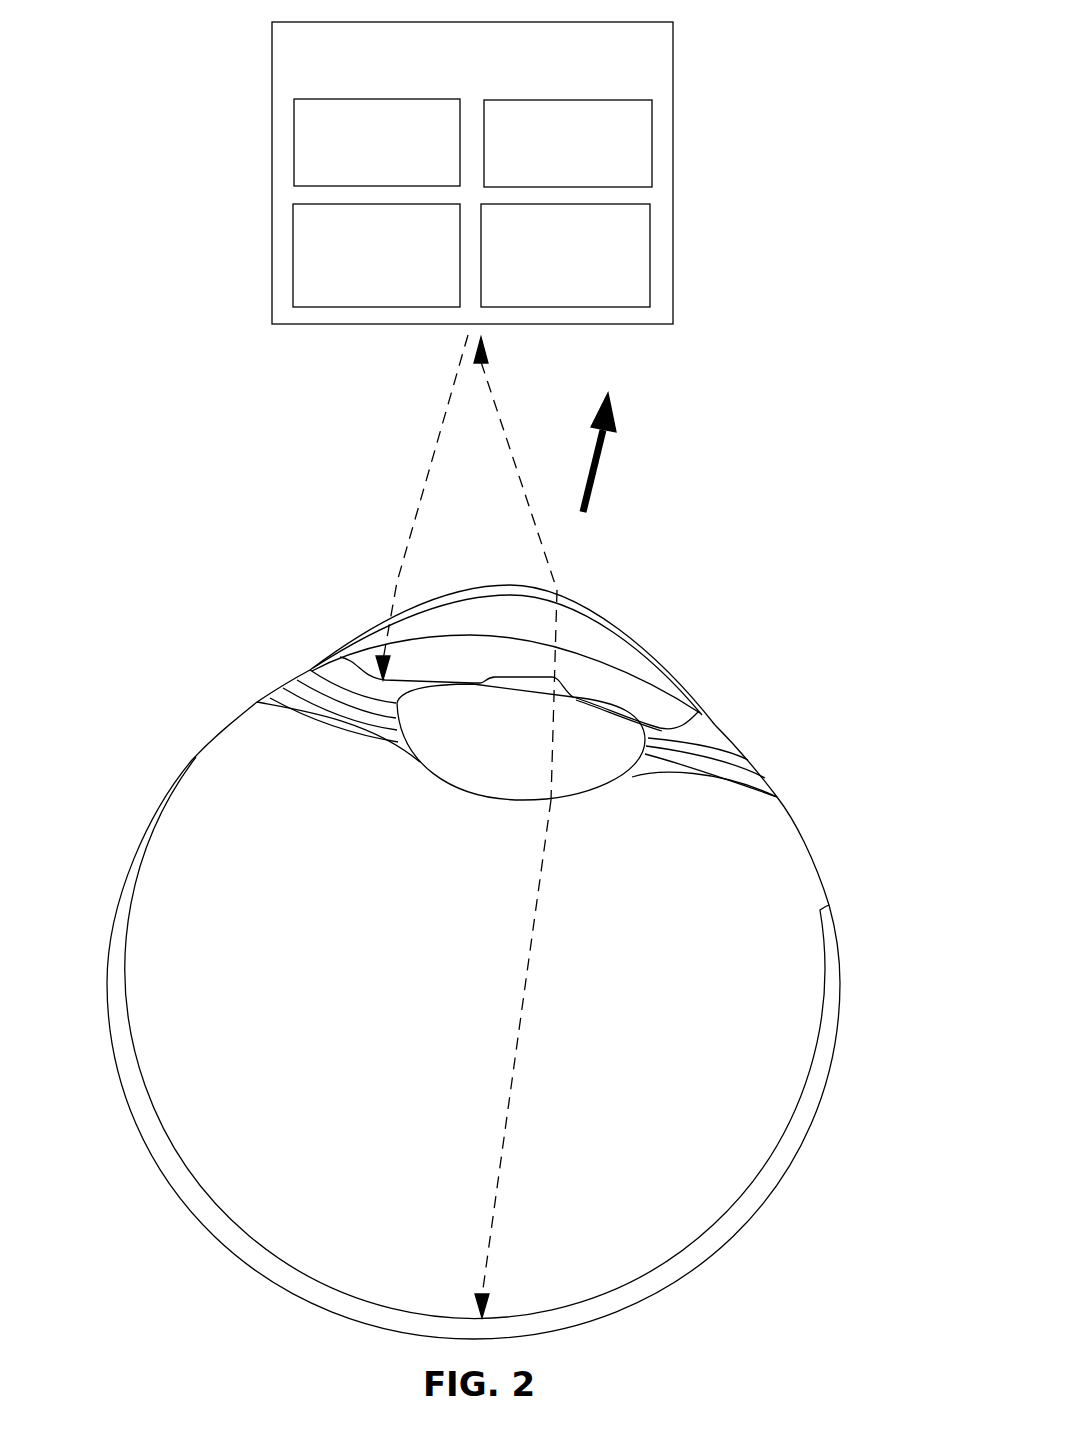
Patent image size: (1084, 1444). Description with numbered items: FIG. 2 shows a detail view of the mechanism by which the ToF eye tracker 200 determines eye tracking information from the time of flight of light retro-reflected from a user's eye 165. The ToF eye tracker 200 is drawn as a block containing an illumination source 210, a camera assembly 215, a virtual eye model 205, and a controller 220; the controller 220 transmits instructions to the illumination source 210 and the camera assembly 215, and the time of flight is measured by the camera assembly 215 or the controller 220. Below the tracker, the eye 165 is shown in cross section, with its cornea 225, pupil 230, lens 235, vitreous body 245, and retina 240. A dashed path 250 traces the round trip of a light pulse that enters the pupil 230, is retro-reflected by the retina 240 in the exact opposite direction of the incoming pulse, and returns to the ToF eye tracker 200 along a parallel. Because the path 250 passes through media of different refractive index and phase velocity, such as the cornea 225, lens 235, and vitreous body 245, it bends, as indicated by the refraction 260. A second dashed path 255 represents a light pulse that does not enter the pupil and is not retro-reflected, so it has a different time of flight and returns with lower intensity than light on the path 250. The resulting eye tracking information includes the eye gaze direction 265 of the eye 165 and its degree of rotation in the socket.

The ToF eye tracker 200 is at (472, 173).
The controller 220 is at (377, 142).
The virtual eye model 205 is at (568, 143).
The illumination source 210 is at (376, 255).
The camera assembly 215 is at (565, 255).
The path 255 is at (437, 417).
The path 250 is at (527, 502).
The refraction 260 is at (567, 588).
The eye gaze direction 265 is at (617, 427).
The eye 165 is at (798, 1250).
The cornea 225 is at (422, 605).
The pupil 230 is at (573, 693).
The lens 235 is at (478, 748).
The vitreous body 245 is at (650, 965).
The retina 240 is at (288, 1258).